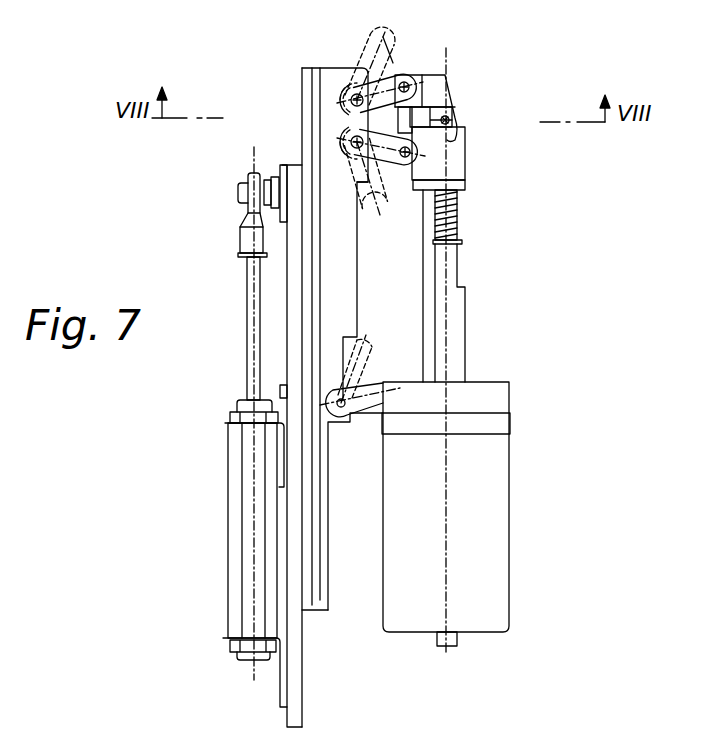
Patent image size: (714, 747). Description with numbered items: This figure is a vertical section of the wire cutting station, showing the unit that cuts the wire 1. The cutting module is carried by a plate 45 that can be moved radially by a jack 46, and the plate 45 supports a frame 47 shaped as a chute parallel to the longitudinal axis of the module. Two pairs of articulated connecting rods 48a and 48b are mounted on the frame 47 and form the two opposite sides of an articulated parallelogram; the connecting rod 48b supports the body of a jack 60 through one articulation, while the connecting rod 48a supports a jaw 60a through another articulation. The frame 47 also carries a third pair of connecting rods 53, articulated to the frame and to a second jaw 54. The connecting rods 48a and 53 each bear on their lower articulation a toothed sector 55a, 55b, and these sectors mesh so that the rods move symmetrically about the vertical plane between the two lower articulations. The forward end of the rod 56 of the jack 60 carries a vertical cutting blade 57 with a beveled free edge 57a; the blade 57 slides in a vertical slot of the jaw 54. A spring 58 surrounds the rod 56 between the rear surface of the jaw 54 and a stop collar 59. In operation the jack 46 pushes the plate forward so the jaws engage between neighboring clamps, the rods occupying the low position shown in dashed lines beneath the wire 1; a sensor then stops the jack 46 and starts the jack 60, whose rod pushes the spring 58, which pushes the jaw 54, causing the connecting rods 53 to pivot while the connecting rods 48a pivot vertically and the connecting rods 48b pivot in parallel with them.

The wire 1 is at (466, 140).
The plate 45 is at (315, 606).
The jack 46 is at (243, 523).
The frame 47 is at (348, 270).
The connecting rods 48a is at (398, 77).
The connecting rods 48b is at (362, 378).
The third pair of connecting rods 53 is at (383, 168).
The second jaw 54 is at (464, 186).
The toothed sector 55a is at (340, 87).
The toothed sector 55b is at (345, 140).
The rod 56 is at (457, 205).
The cutting blade 57 is at (457, 120).
The free edge 57a is at (453, 113).
The spring 58 is at (462, 240).
The stop collar 59 is at (462, 242).
The jack 60 is at (497, 527).
The jaw 60a is at (447, 97).